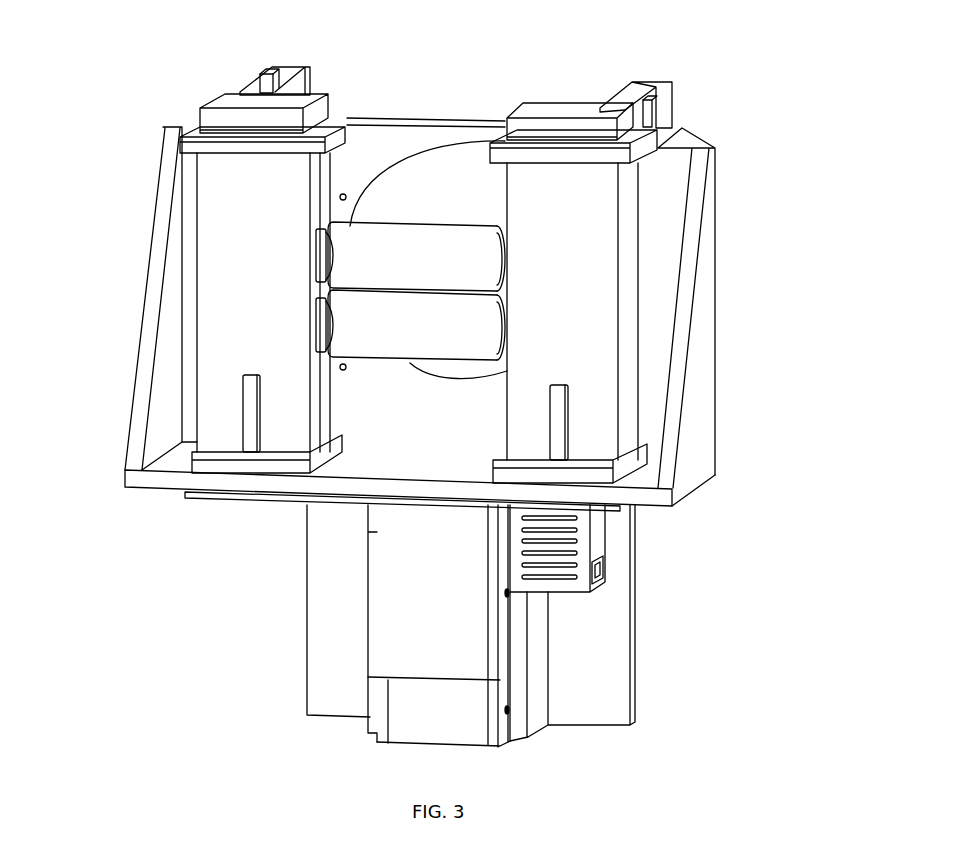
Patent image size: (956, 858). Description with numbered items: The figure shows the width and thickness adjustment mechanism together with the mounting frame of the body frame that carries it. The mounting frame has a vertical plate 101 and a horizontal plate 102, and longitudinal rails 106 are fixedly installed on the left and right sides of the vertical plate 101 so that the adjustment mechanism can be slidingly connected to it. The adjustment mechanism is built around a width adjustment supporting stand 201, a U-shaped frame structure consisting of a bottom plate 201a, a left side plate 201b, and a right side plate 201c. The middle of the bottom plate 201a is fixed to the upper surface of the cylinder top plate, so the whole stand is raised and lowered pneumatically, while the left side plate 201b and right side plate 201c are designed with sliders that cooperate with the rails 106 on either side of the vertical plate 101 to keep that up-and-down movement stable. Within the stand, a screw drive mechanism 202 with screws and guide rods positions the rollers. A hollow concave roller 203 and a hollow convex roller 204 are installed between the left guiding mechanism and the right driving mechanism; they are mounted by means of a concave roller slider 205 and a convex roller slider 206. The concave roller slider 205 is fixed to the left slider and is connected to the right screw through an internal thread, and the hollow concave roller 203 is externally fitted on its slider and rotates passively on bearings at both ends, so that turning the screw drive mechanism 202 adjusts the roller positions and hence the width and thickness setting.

The vertical plate 101 is at (362, 117).
The horizontal plate 102 is at (210, 493).
The longitudinal rails 106 is at (263, 73).
The width adjustment supporting stand 201 is at (437, 331).
The bottom plate 201a is at (136, 473).
The left side plate 201b is at (148, 352).
The right side plate 201c is at (710, 288).
The screw drive mechanism 202 is at (193, 343).
The hollow concave roller 203 is at (370, 222).
The hollow convex roller 204 is at (393, 307).
The concave roller slider 205 is at (318, 248).
The convex roller slider 206 is at (318, 318).